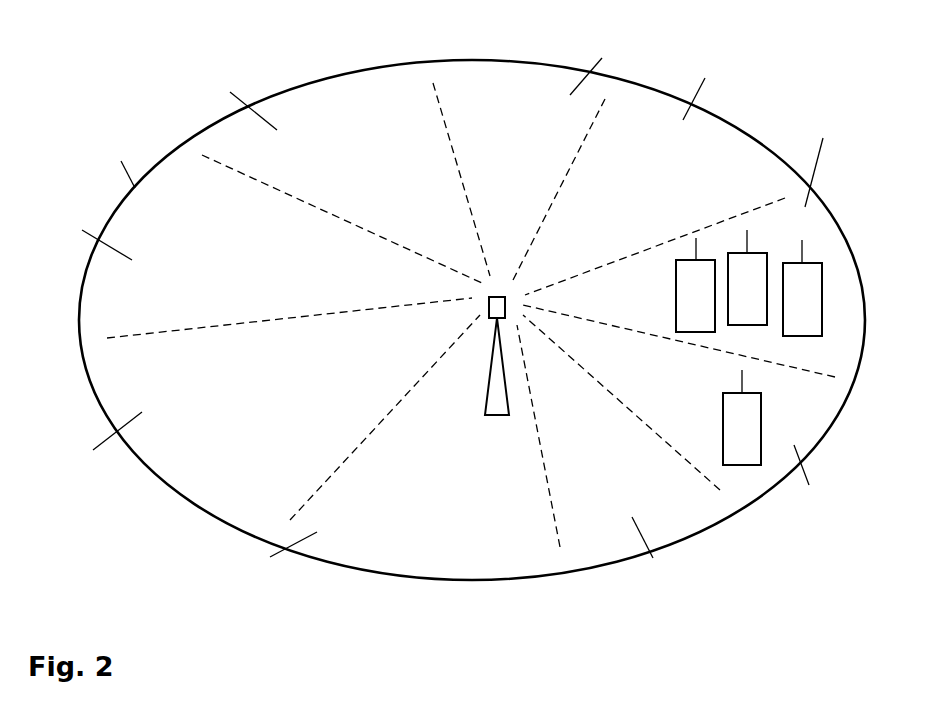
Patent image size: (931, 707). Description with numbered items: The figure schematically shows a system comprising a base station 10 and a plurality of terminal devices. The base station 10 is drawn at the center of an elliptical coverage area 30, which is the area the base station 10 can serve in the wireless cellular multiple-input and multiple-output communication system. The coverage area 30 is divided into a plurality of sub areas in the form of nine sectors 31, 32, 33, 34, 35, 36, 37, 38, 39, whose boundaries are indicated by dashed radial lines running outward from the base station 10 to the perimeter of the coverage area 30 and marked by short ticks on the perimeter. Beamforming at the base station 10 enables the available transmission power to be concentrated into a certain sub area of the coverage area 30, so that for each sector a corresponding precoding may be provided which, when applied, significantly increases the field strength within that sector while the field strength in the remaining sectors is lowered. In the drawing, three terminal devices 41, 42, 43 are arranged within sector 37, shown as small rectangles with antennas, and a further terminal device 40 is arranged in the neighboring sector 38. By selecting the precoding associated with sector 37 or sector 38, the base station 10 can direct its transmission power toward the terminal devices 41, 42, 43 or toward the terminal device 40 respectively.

The base station 10 is at (493, 418).
The coverage area 30 is at (108, 158).
The sector 31 is at (277, 560).
The sector 32 is at (96, 436).
The sector 33 is at (87, 234).
The sector 34 is at (233, 93).
The sector 35 is at (596, 62).
The sector 36 is at (701, 84).
The sector 37 is at (827, 159).
The sector 38 is at (804, 484).
The sector 39 is at (658, 552).
The transmitter 40 is at (742, 417).
The terminal device 41 is at (802, 288).
The terminal device 42 is at (747, 277).
The terminal device 43 is at (695, 285).